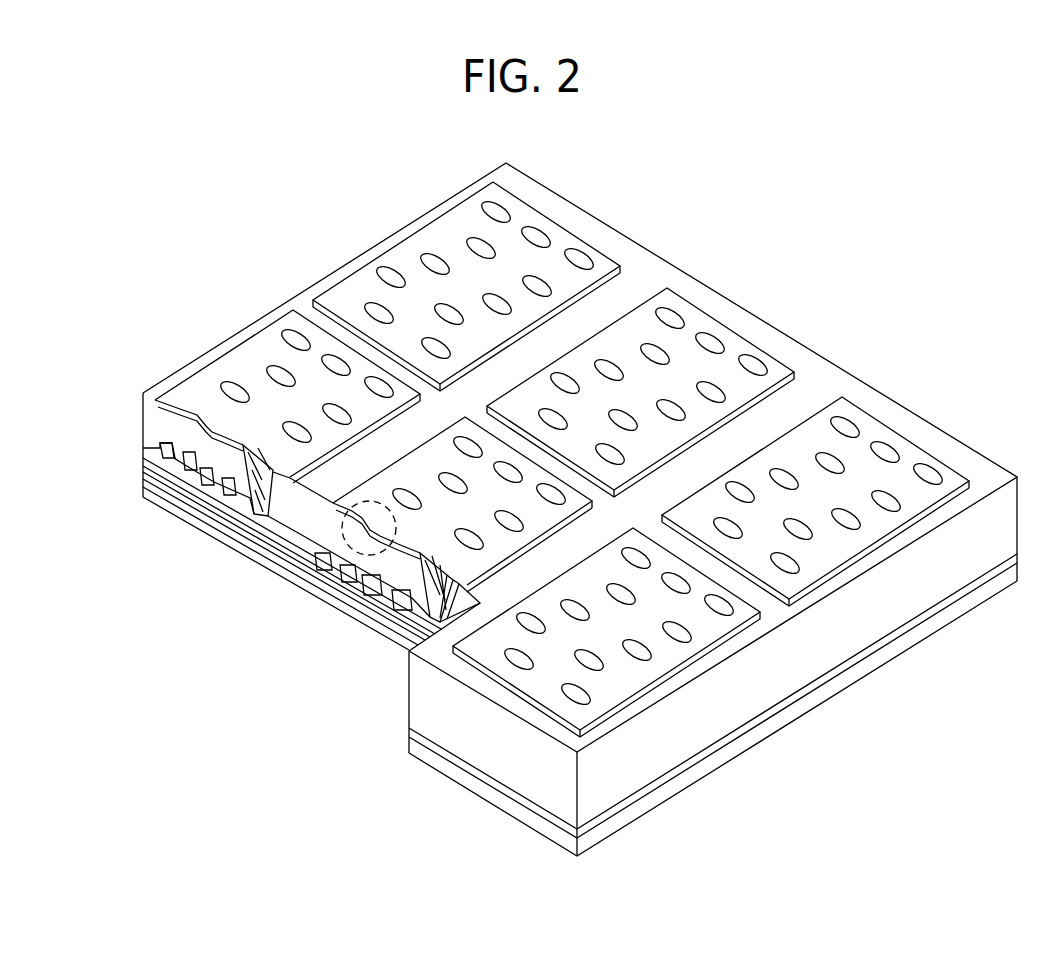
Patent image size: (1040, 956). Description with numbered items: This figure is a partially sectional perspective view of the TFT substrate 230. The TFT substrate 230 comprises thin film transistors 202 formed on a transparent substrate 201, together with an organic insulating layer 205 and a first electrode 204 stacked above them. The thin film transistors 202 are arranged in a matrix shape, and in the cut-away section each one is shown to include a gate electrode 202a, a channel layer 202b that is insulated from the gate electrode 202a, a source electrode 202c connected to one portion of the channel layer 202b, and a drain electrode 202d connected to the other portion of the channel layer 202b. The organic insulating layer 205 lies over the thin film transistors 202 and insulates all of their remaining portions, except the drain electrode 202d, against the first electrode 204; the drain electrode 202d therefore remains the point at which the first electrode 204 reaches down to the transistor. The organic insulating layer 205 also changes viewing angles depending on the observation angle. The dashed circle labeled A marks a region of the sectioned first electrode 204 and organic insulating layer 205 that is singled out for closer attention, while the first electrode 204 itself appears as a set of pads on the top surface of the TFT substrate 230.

The transparent substrate 201 is at (482, 788).
The thin film transistors 202 is at (355, 615).
The gate electrode 202a is at (180, 494).
The channel layer 202b is at (200, 500).
The source electrode 202c is at (143, 448).
The drain electrode 202d is at (245, 525).
The first electrode 204 is at (195, 377).
The organic insulating layer 205 is at (143, 410).
The TFT substrate 230 is at (826, 282).
The enlarged region A is at (345, 542).